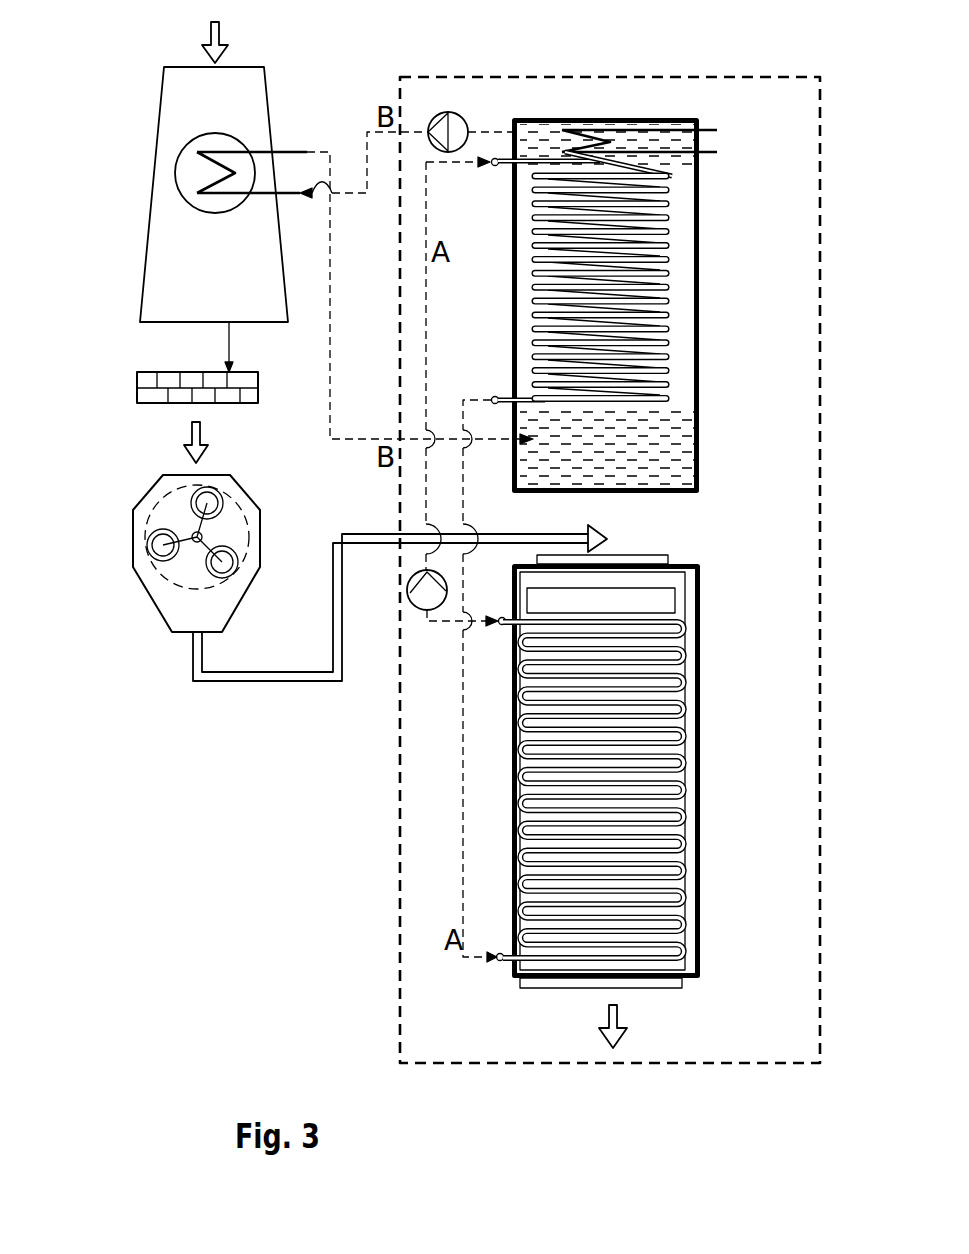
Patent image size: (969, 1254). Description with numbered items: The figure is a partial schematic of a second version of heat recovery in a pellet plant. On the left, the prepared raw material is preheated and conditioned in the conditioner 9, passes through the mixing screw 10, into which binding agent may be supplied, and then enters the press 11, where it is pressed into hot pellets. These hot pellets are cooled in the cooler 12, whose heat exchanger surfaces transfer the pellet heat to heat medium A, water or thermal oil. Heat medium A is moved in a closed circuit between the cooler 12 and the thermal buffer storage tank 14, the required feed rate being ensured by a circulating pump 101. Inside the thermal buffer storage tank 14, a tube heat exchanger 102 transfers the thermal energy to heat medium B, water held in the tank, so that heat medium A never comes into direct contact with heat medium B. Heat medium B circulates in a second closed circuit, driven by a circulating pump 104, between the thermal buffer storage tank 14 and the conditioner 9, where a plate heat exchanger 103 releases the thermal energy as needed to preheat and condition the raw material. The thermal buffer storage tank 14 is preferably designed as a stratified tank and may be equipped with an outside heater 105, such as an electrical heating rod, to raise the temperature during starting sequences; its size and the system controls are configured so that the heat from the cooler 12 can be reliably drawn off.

The conditioner 9 is at (160, 115).
The plate heat exchanger 103 is at (185, 173).
The mixing screw 10 is at (152, 398).
The press 11 is at (182, 568).
The cooler 12 is at (700, 655).
The thermal buffer storage tank 14 is at (700, 292).
The circulating pump 101 is at (428, 602).
The tube heat exchanger 102 is at (652, 322).
The circulating pump 104 is at (453, 125).
The outside heater 105 is at (708, 155).